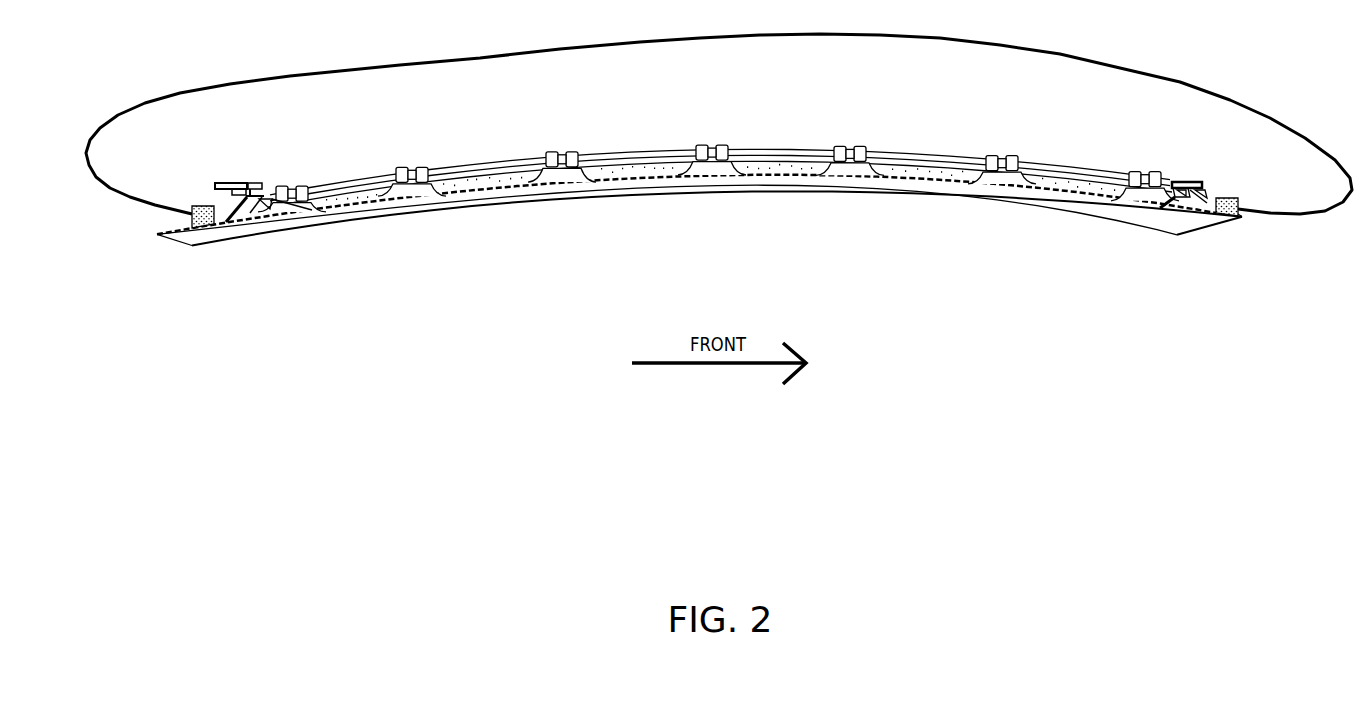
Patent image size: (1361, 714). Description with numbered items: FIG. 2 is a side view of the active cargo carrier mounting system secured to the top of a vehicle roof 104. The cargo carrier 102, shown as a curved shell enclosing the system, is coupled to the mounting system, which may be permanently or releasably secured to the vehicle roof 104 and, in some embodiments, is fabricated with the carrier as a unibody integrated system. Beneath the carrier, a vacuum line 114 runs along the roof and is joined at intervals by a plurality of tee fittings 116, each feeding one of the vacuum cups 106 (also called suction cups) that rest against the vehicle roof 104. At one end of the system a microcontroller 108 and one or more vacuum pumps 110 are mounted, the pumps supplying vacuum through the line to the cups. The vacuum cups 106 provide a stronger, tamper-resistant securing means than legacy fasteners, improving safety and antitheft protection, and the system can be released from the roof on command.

The cargo carrier 102 is at (128, 195).
The vehicle roof 104 is at (172, 244).
The vacuum cups 106 is at (998, 170).
The microcontroller 108 is at (240, 183).
The vacuum pump 110 is at (256, 182).
The vacuum line 114 is at (634, 151).
The tee fittings 116 is at (851, 147).